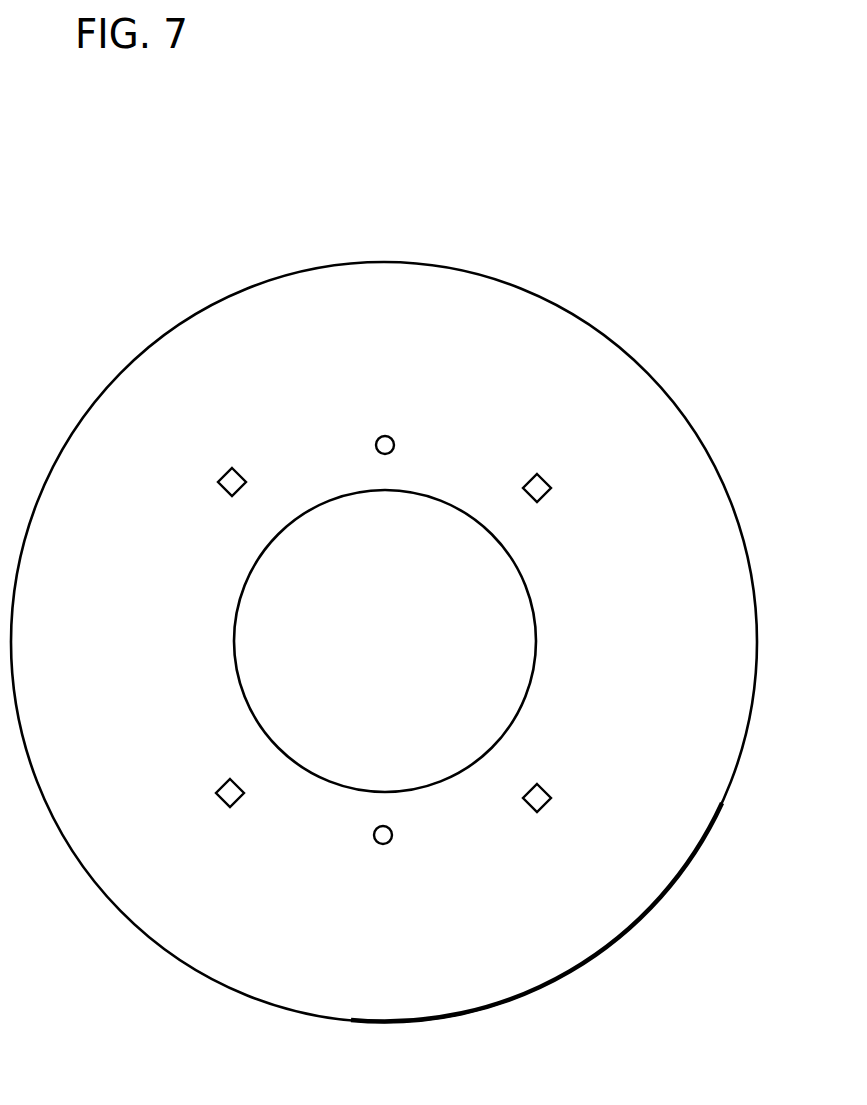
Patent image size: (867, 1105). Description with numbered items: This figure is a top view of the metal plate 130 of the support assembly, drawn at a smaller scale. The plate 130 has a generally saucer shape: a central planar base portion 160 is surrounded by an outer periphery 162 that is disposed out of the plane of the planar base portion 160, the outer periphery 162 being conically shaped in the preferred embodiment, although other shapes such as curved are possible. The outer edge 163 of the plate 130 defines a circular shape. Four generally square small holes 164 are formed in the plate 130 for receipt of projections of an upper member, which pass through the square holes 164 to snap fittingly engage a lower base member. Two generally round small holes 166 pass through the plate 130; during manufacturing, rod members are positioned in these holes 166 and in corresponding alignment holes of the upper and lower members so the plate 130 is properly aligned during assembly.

The plate 130 is at (618, 287).
The planar base portion 160 is at (415, 616).
The outer periphery 162 is at (662, 648).
The outer edge 163 is at (547, 987).
The square small holes 164 is at (230, 472).
The round small holes 166 is at (383, 436).